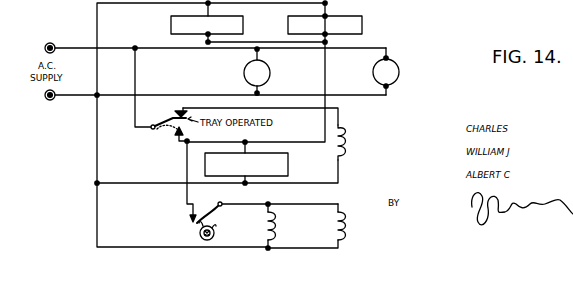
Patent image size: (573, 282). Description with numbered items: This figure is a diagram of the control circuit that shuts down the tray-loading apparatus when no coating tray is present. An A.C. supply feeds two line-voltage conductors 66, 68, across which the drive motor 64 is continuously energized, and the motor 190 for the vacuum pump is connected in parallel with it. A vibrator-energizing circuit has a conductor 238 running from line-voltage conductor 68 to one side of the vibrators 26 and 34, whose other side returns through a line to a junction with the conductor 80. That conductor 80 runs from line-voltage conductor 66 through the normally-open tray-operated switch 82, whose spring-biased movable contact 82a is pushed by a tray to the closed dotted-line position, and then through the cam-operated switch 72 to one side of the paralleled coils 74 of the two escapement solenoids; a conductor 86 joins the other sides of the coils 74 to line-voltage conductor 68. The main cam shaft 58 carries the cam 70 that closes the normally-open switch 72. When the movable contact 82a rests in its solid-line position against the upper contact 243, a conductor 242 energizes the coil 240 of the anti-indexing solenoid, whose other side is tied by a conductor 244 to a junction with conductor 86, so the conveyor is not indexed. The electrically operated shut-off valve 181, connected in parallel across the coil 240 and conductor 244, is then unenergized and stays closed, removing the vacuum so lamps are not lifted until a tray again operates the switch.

The line-voltage conductor 66 is at (79, 47).
The line-voltage conductor 68 is at (78, 99).
The conductor 238 is at (110, 4).
The vibrator 26 is at (244, 25).
The vibrator 34 is at (363, 25).
The motor 190 is at (244, 74).
The motor 64 is at (394, 60).
The coil 240 is at (326, 74).
The conductor 242 is at (340, 110).
The upper contact 243 is at (183, 112).
The tray-operated switch 82 is at (157, 122).
The movable contact 82a is at (166, 141).
The conductor 80 is at (186, 173).
The shut-off valve 181 is at (289, 166).
The conductor 244 is at (340, 181).
The conductor 86 is at (96, 183).
The switch 72 is at (216, 206).
The main cam shaft 58 is at (200, 233).
The cam 70 is at (214, 233).
The coils 74 is at (268, 227).